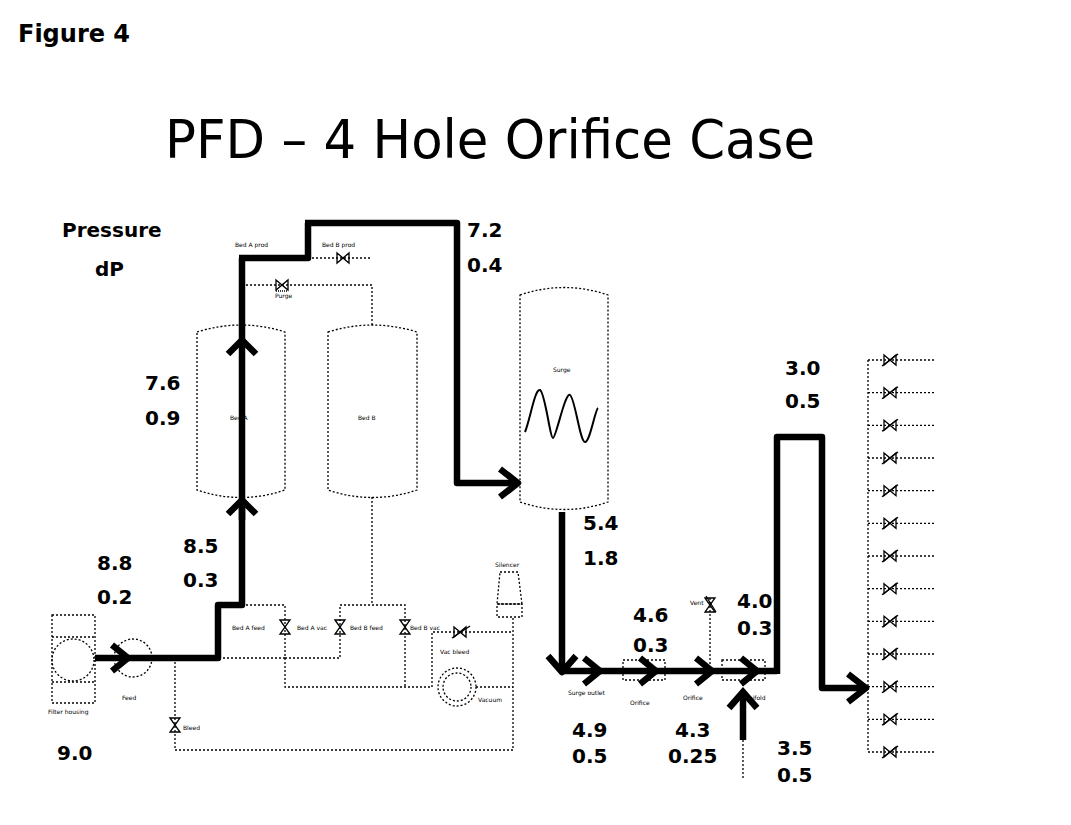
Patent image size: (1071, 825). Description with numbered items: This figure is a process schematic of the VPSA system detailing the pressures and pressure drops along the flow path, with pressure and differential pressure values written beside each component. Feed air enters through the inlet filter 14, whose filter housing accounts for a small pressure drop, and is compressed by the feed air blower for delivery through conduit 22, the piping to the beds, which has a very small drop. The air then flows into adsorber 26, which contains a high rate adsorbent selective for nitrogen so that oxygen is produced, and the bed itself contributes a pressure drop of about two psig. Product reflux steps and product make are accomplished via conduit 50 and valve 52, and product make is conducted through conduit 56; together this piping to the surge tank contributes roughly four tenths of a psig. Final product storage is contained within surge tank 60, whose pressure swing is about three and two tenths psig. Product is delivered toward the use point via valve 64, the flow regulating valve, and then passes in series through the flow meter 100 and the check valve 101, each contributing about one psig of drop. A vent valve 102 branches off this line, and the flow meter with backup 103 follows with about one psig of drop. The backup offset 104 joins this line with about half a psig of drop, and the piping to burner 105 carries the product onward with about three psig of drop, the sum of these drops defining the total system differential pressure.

The inlet filter 14 is at (65, 644).
The conduit 22 is at (250, 531).
The adsorber 26 is at (225, 411).
The conduit 50 is at (219, 291).
The valve 52 is at (273, 239).
The conduit 56 is at (411, 347).
The surge tank 60 is at (578, 399).
The valve 64 is at (575, 598).
The flow meter 100 is at (632, 692).
The check valve 101 is at (683, 688).
The vent valve 102 is at (687, 618).
The flow meter with backup 103 is at (768, 650).
The backup offset 104 is at (746, 712).
The piping to burner 105 is at (798, 569).